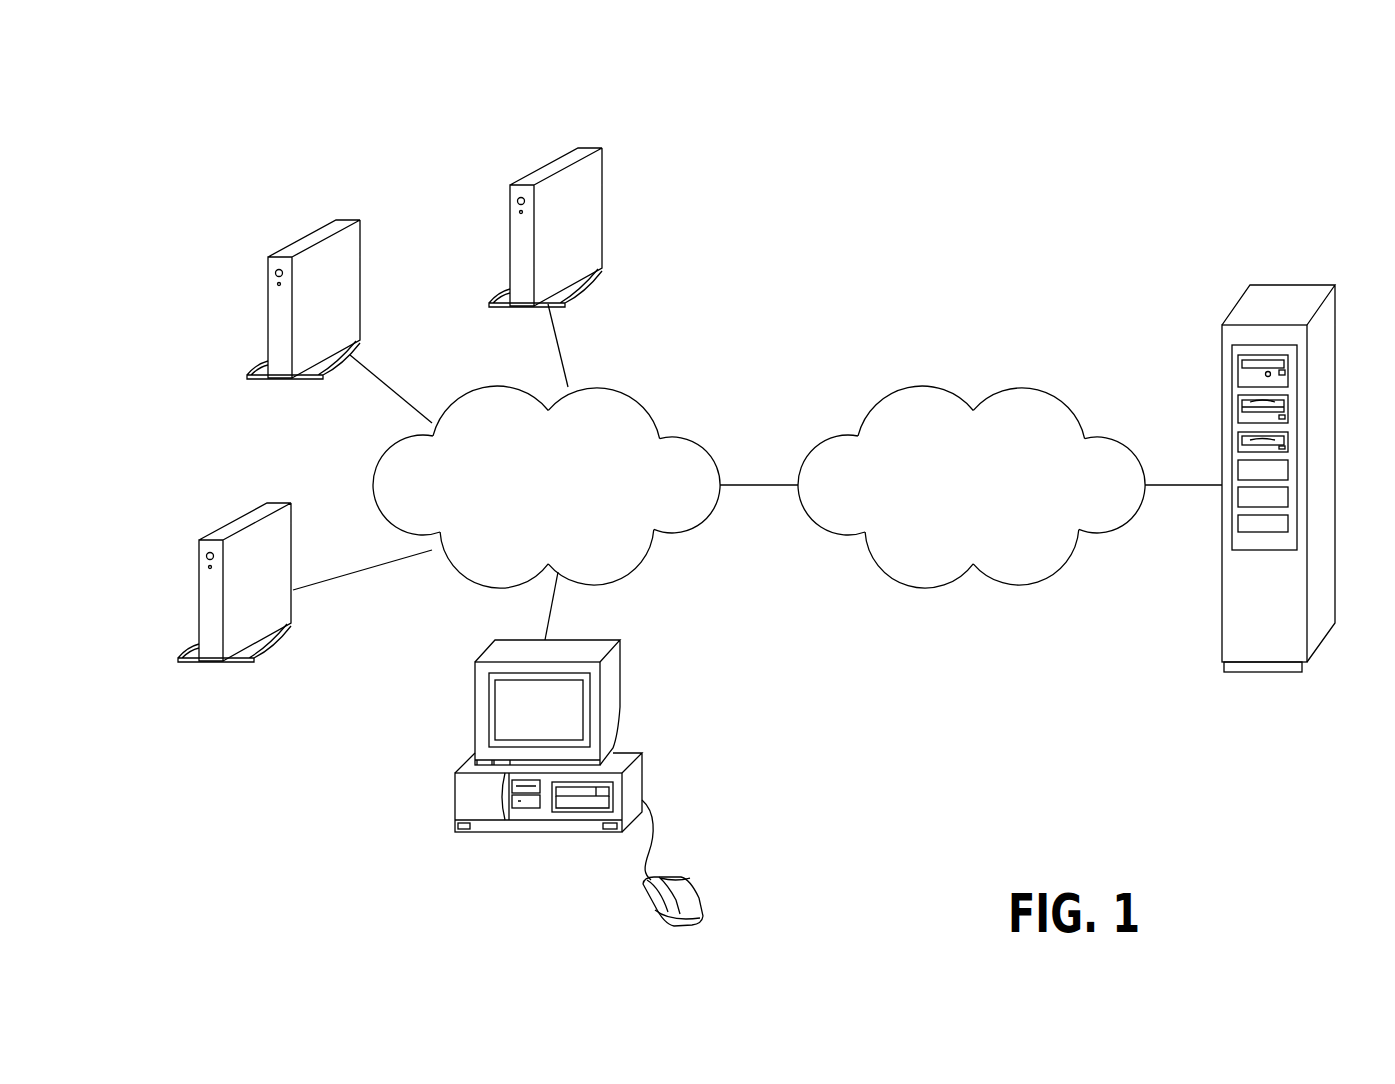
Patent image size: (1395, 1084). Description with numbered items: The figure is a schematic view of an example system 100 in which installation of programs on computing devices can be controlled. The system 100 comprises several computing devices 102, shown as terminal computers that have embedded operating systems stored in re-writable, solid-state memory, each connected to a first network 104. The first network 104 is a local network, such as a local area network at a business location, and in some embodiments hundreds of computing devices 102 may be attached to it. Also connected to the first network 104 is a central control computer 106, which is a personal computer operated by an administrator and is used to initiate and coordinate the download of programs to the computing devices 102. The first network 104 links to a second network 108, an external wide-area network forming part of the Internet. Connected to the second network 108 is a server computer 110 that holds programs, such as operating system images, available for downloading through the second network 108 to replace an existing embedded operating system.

The system 100 is at (125, 135).
The computing devices 102 is at (353, 238).
The first network 104 is at (567, 514).
The central control computer 106 is at (607, 677).
The second network 108 is at (992, 514).
The server computer 110 is at (1325, 322).